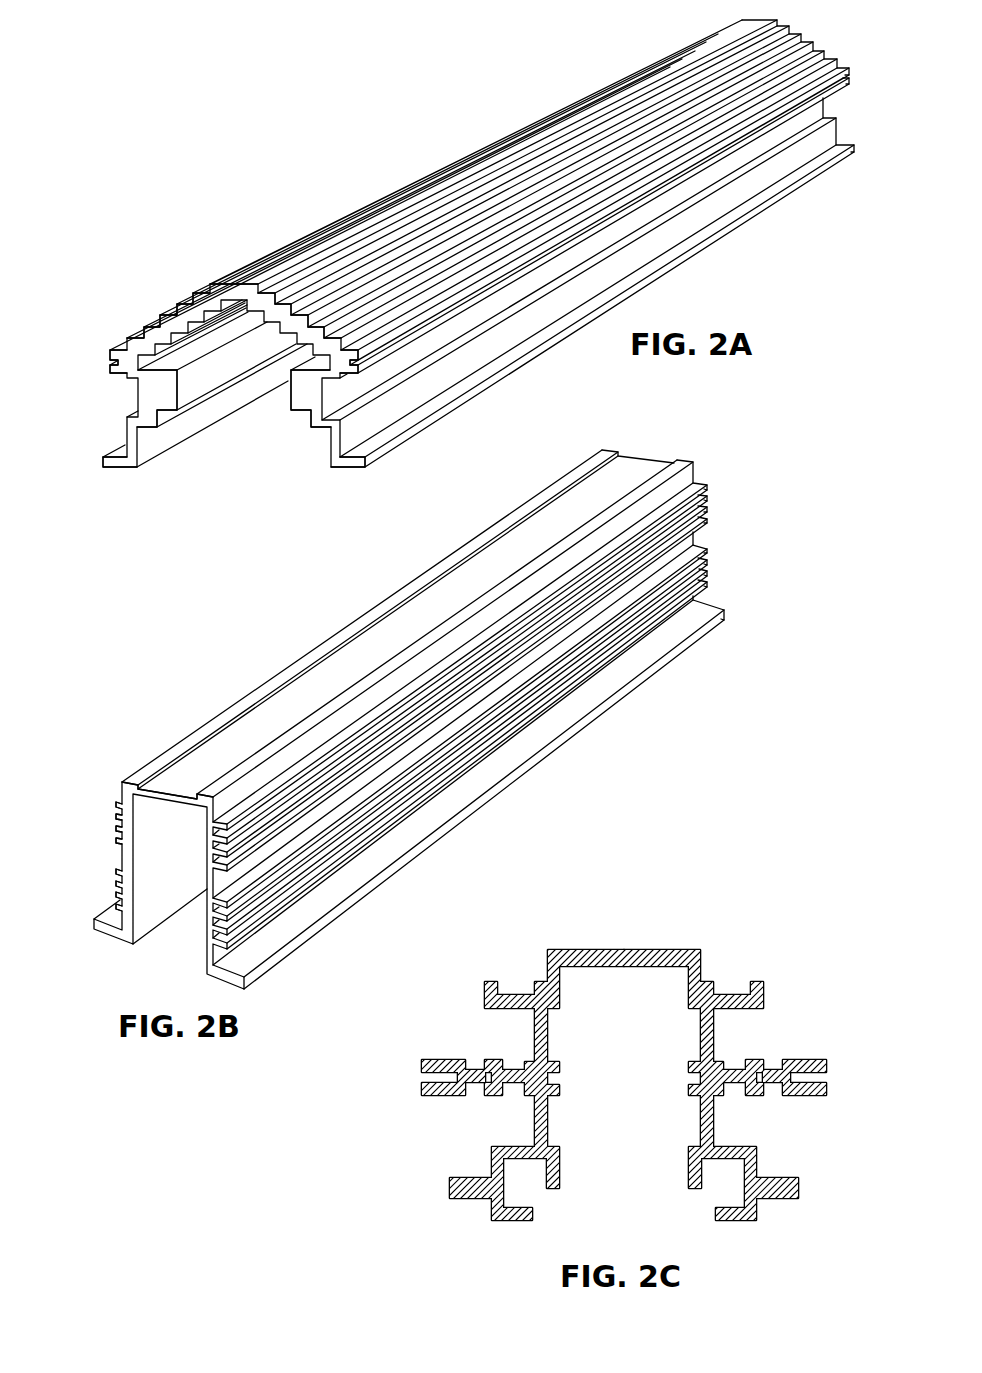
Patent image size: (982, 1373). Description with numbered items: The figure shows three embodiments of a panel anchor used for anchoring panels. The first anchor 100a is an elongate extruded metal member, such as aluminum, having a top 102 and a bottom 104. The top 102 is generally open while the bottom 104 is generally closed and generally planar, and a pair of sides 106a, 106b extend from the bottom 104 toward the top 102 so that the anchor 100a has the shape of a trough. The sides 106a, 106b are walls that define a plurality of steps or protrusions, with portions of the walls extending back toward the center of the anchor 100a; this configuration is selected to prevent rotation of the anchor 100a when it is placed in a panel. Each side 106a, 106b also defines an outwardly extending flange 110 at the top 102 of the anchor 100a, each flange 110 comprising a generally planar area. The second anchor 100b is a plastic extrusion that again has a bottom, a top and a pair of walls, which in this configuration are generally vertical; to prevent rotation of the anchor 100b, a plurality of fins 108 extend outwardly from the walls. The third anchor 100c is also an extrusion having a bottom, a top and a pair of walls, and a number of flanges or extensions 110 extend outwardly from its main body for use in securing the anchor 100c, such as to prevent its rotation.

In FIG. 2A, the anchor 100a is at (151, 296).
In FIG. 2B, the anchor 100b is at (180, 712).
In FIG. 2C, the anchor 100c is at (590, 915).
In FIG. 2A, the top 102 is at (203, 465).
In FIG. 2A, the bottom 104 is at (270, 230).
In FIG. 2A, the side 106a is at (430, 350).
In FIG. 2A, the side 106b is at (135, 380).
In FIG. 2B, the fins 108 is at (121, 781).
In FIG. 2A, the flange 110 is at (121, 474).
In FIG. 2C, the flange 110 is at (455, 1178).